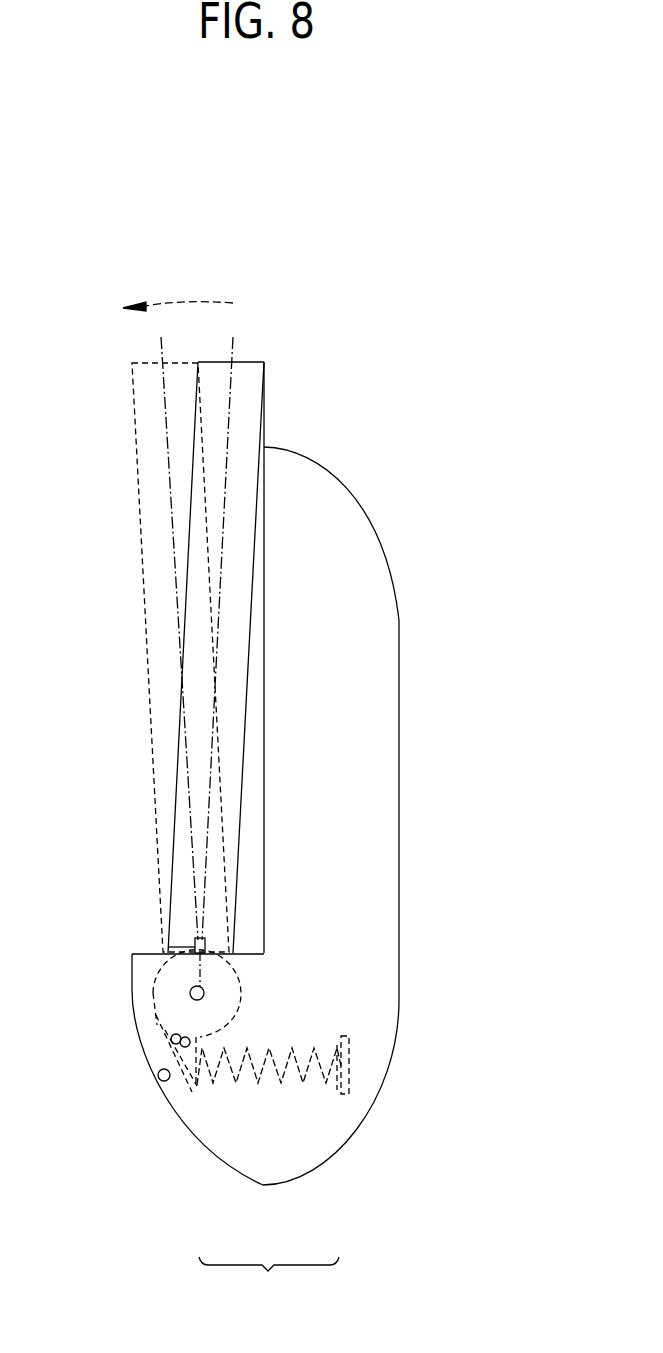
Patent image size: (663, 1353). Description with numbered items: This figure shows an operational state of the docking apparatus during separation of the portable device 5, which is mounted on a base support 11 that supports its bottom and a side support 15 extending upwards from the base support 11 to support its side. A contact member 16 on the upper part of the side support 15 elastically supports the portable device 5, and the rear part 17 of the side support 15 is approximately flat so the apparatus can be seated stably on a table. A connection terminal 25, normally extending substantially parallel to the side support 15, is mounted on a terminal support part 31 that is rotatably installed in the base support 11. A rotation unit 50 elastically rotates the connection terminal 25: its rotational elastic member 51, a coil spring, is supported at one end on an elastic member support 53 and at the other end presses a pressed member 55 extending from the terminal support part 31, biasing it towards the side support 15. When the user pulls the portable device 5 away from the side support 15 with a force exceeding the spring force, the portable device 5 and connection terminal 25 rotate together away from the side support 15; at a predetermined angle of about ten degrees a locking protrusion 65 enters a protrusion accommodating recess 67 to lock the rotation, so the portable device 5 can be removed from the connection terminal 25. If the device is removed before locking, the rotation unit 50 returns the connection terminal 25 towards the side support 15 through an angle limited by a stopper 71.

The portable device 5 is at (212, 390).
The base support 11 is at (140, 951).
The side support 15 is at (264, 612).
The contact member 16 is at (262, 447).
The rear part 17 is at (399, 721).
The connection terminal 25 is at (168, 947).
The terminal support part 31 is at (228, 983).
The rotation unit 50 is at (269, 1280).
The rotational elastic member 51 is at (265, 1070).
The elastic member support 53 is at (345, 1097).
The pressed member 55 is at (192, 1088).
The locking protrusion 65 is at (200, 1037).
The protrusion accommodating recess 67 is at (168, 1042).
The stopper 71 is at (160, 1076).